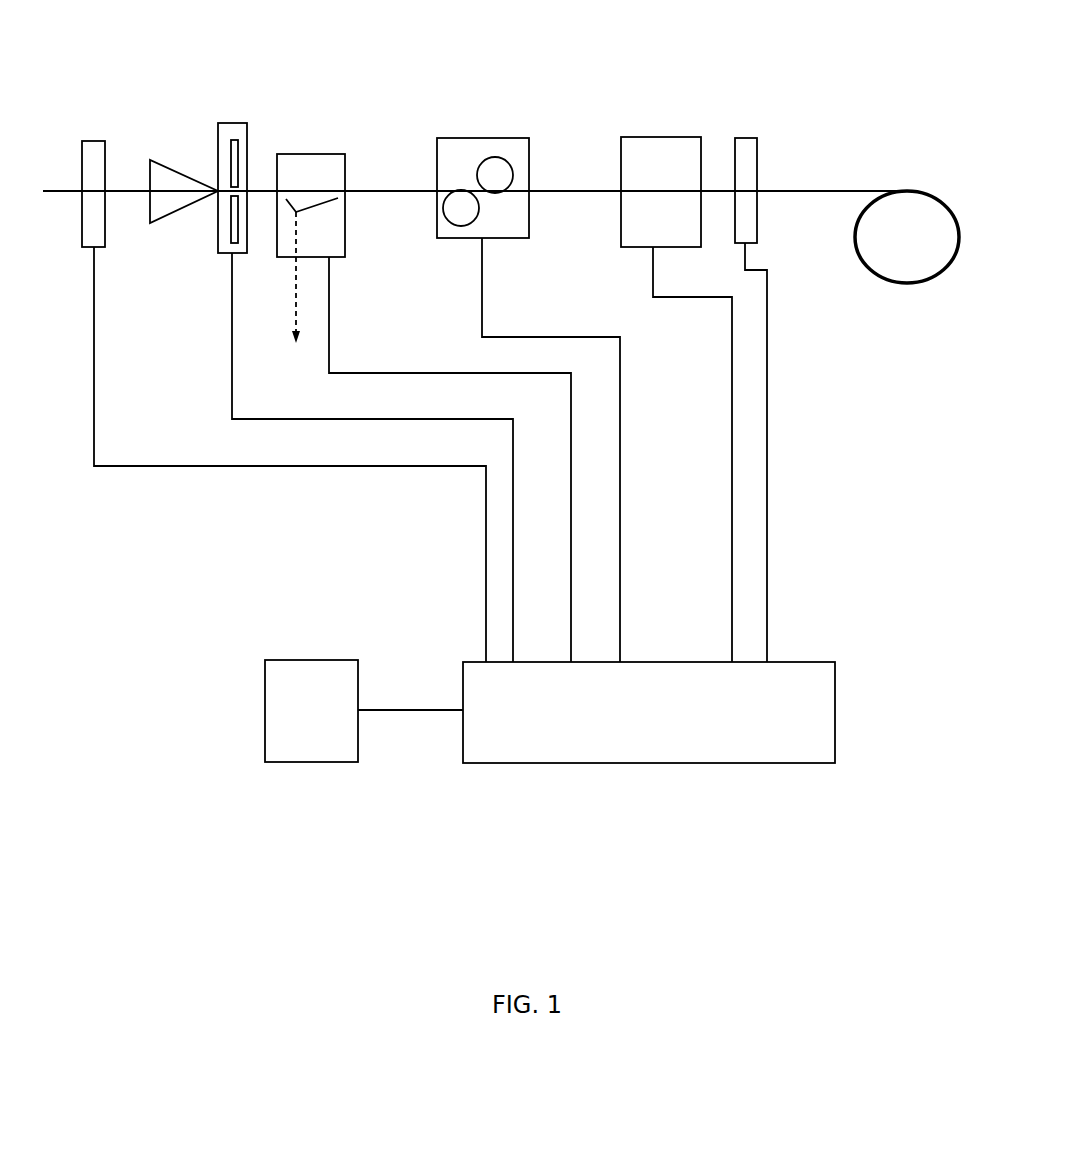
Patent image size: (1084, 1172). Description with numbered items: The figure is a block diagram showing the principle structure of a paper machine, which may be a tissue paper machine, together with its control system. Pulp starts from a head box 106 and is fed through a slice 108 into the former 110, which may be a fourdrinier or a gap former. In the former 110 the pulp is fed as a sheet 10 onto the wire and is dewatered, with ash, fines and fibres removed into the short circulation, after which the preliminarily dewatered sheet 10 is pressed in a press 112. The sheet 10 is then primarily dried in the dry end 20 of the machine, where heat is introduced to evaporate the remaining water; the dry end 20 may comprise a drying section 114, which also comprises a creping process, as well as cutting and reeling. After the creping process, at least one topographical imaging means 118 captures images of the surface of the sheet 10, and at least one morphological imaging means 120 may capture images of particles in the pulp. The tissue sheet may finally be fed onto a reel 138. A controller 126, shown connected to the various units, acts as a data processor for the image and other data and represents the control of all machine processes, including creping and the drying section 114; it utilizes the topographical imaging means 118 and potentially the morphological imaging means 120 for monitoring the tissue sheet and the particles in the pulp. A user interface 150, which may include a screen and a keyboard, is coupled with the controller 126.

The sheet 10 is at (258, 187).
The dry end 20 is at (592, 74).
The head box 106 is at (160, 158).
The slice 108 is at (217, 223).
The former 110 is at (295, 152).
The press 112 is at (468, 138).
The drying section 114 is at (673, 137).
The topographical imaging means 118 is at (747, 138).
The morphological imaging means 120 is at (93, 140).
The controller 126 is at (506, 692).
The reel 138 is at (863, 263).
The user interface 150 is at (295, 660).